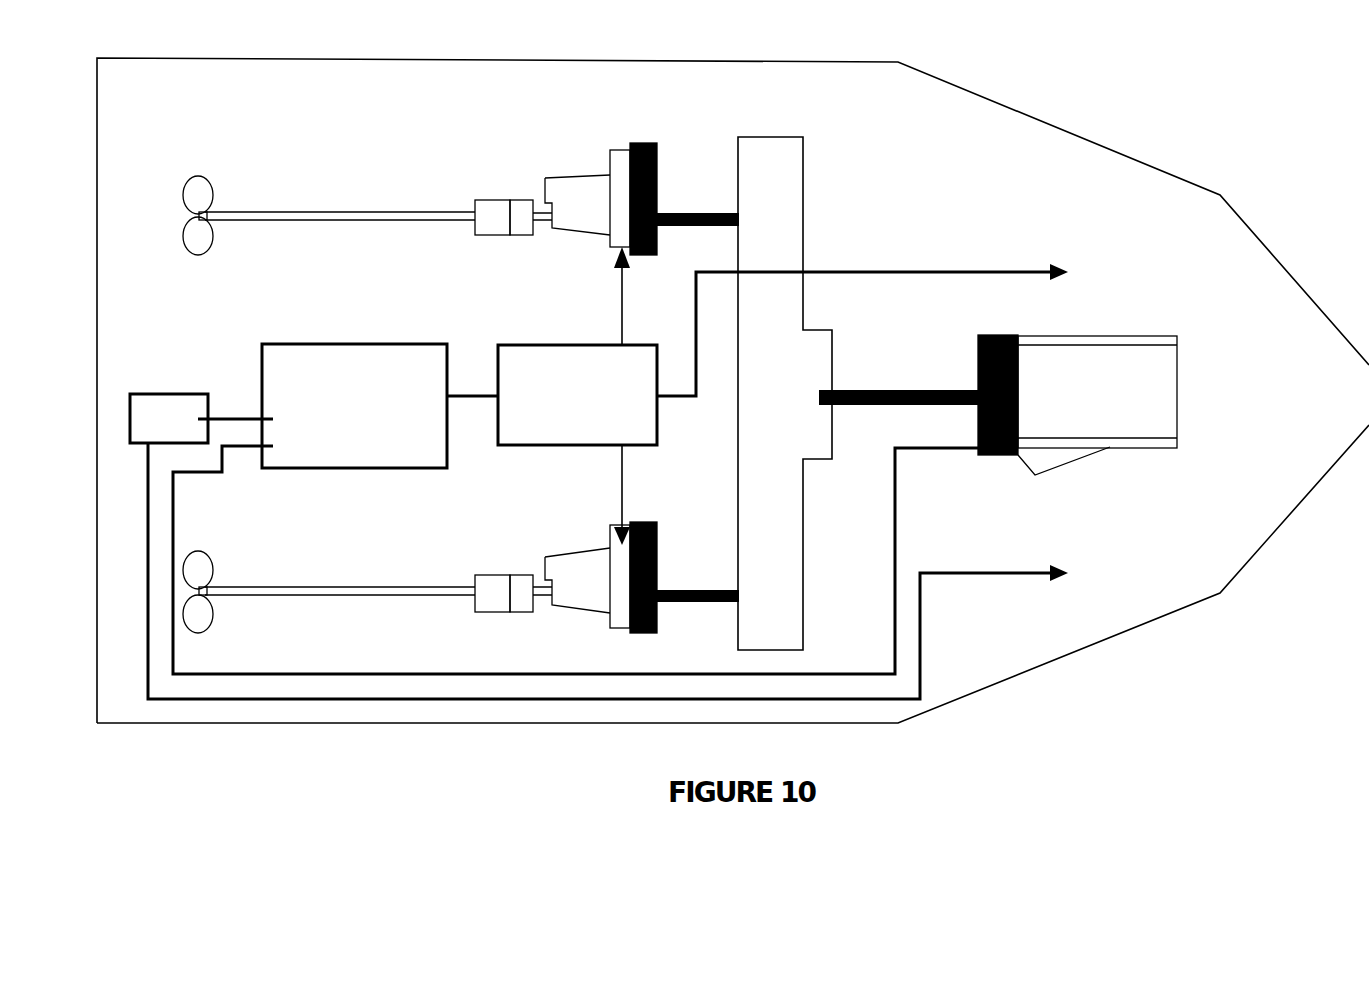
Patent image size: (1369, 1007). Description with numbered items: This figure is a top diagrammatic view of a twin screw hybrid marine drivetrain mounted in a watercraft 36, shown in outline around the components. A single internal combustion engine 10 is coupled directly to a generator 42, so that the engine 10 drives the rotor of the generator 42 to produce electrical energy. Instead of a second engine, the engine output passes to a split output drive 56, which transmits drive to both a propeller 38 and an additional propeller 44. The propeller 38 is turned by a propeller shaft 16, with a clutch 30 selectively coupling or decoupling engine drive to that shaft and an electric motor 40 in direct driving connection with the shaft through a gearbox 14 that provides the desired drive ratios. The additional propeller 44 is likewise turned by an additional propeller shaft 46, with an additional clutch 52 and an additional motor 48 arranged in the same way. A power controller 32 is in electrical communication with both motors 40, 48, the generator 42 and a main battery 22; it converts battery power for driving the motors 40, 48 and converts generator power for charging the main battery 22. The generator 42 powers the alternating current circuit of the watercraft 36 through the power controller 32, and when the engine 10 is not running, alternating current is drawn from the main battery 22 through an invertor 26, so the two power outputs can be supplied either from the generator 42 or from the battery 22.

The internal combustion engine 10 is at (1150, 392).
The gearbox 14 is at (548, 203).
The propeller shaft 16 is at (347, 220).
The main battery 22 is at (380, 406).
The invertor 26 is at (157, 407).
The clutch 30 is at (645, 143).
The power controller 32 is at (848, 352).
The watercraft 36 is at (1120, 635).
The propeller 38 is at (198, 248).
The electric motor 40 is at (622, 170).
The generator 42 is at (995, 466).
The additional propeller 44 is at (200, 563).
The additional propeller shaft 46 is at (350, 595).
The additional motor 48 is at (620, 547).
The additional clutch 52 is at (645, 522).
The split output drive 56 is at (797, 203).